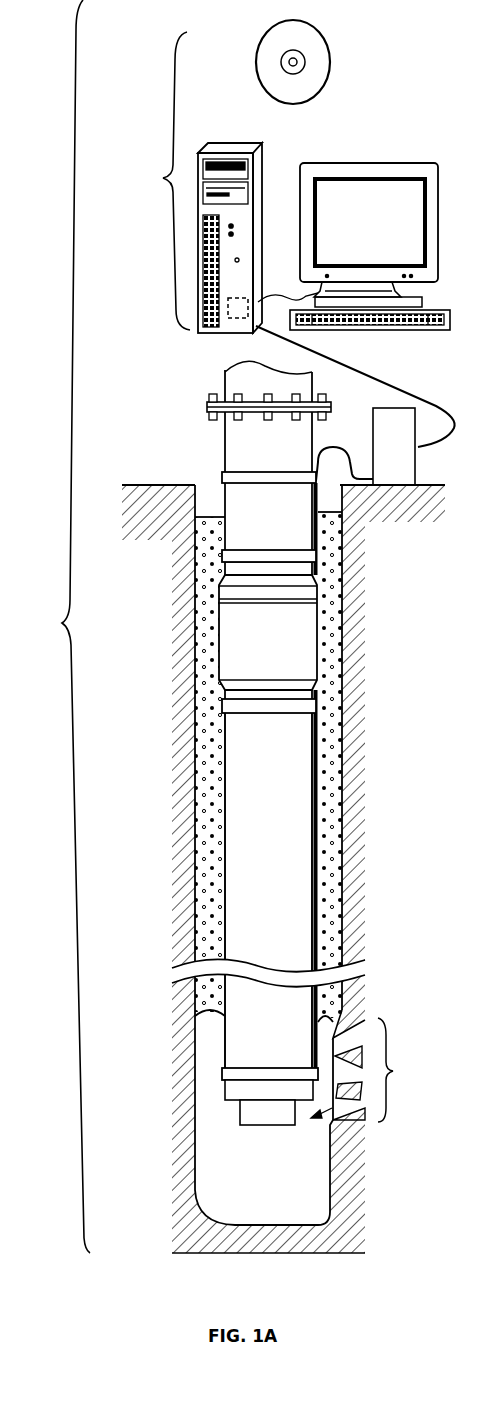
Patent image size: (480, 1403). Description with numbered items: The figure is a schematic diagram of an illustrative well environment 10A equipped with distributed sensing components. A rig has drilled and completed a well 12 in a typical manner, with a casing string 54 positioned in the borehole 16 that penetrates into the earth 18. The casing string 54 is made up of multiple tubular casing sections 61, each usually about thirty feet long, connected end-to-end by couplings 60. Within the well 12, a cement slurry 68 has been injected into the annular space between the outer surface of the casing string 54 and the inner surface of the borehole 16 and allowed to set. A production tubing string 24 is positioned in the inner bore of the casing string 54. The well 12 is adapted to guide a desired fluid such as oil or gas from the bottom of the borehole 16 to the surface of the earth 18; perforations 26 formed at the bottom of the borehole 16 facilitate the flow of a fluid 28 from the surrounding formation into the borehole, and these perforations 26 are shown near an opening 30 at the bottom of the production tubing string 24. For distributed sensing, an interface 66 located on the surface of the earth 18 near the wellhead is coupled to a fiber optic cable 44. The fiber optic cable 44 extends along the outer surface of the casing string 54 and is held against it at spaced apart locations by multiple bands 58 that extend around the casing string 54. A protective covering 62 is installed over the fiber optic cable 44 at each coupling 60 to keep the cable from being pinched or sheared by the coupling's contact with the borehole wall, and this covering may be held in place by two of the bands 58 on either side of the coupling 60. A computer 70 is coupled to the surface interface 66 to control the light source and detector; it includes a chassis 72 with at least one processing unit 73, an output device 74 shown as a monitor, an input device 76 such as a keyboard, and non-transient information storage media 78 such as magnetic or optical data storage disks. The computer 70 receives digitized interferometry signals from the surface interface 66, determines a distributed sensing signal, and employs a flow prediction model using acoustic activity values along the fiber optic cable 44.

The well environment 10A is at (52, 626).
The well 12 is at (173, 400).
The borehole 16 is at (212, 494).
The earth 18 is at (171, 524).
The production tubing string 24 is at (256, 1118).
The perforations 26 is at (376, 1070).
The fluid 28 is at (326, 1191).
The opening 30 is at (264, 1132).
The fiber optic cable 44 is at (336, 450).
The casing string 54 is at (222, 460).
The bands 58 is at (255, 471).
The couplings 60 is at (300, 656).
The tubular casing sections 61 is at (272, 842).
The protective covering 62 is at (322, 628).
The interface 66 is at (418, 470).
The cement slurry 68 is at (335, 822).
The computer 70 is at (160, 181).
The chassis 72 is at (257, 178).
The processing unit 73 is at (238, 318).
The output device 74 is at (438, 233).
The input device 76 is at (432, 312).
The non-transient information storage media 78 is at (322, 40).